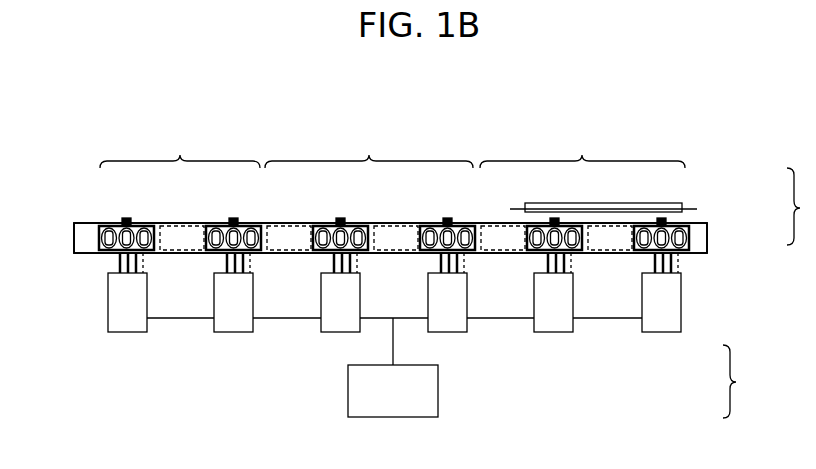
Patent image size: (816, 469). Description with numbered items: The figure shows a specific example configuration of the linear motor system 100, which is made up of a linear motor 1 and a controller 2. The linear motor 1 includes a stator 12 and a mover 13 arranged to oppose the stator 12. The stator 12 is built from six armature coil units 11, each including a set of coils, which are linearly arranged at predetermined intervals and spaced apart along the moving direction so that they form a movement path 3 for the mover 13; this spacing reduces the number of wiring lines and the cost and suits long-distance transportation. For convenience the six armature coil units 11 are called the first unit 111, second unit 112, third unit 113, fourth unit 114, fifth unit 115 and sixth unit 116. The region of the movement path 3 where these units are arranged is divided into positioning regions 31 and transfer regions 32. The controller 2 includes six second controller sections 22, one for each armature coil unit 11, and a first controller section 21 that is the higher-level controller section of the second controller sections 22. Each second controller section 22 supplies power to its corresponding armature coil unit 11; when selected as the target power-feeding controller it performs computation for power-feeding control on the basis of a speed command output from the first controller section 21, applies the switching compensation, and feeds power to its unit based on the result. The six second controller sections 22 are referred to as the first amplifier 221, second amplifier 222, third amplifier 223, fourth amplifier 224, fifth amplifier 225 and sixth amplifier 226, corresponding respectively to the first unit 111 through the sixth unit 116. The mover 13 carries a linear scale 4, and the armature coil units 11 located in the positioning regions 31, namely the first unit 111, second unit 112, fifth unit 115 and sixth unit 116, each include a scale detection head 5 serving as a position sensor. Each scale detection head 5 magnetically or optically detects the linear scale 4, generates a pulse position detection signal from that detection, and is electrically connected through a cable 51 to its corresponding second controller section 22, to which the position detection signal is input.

The linear motor system 100 is at (716, 172).
The linear motor 1 is at (801, 206).
The controller 2 is at (736, 381).
The movement path 3 is at (716, 252).
The linear scale 4 is at (512, 209).
The scale detection head 5 is at (127, 217).
The armature coil unit 11 is at (92, 239).
The stator 12 is at (714, 232).
The mover 13 is at (674, 196).
The first controller section 21 is at (438, 402).
The second controller section 22 is at (675, 336).
The positioning region 31 is at (392, 148).
The transfer region 32 is at (369, 148).
The cable 51 is at (147, 263).
The first unit 111 is at (100, 225).
The second unit 112 is at (207, 226).
The third unit 113 is at (313, 226).
The fourth unit 114 is at (420, 226).
The fifth unit 115 is at (528, 250).
The sixth unit 116 is at (635, 250).
The first amplifier 221 is at (128, 332).
The second amplifier 222 is at (233, 332).
The third amplifier 223 is at (340, 332).
The fourth amplifier 224 is at (445, 332).
The fifth amplifier 225 is at (552, 332).
The sixth amplifier 226 is at (647, 332).